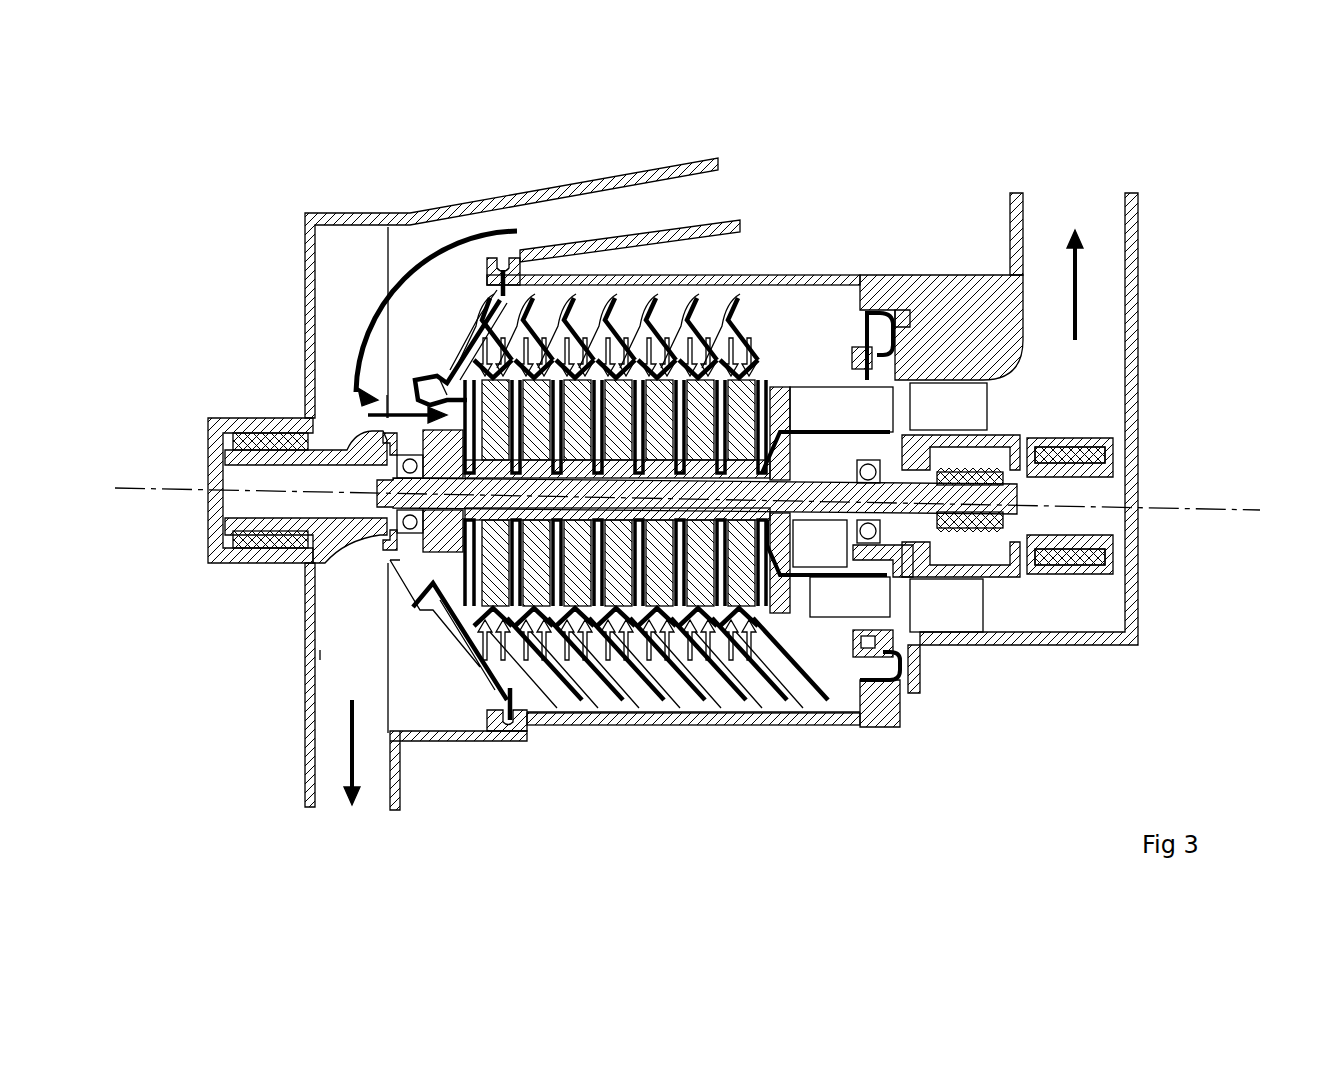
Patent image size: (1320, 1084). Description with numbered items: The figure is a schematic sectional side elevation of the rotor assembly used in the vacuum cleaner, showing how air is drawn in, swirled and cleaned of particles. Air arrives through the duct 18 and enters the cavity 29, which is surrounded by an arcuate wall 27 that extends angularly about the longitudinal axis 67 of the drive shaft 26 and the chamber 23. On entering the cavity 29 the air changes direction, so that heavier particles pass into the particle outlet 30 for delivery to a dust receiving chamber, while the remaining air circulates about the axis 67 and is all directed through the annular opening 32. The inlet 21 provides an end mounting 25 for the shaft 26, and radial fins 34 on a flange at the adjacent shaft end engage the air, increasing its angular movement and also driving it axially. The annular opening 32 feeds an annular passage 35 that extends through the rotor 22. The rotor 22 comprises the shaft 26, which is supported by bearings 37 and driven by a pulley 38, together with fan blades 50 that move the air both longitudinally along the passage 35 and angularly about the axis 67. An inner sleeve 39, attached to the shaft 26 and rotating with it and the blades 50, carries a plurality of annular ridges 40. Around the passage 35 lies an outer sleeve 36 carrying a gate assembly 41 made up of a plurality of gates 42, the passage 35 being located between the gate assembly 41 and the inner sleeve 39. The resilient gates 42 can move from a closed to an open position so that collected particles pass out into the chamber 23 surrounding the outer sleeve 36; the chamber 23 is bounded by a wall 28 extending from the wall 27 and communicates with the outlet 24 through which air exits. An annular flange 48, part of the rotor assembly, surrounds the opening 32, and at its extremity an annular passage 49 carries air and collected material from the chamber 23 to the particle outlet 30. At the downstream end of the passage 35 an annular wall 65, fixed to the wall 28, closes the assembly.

The duct 18 is at (668, 168).
The inlet 21 is at (425, 300).
The rotor 22 is at (800, 417).
The chamber 23 is at (637, 700).
The outlet 24 is at (1090, 221).
The end mounting 25 is at (372, 560).
The drive shaft 26 is at (1017, 510).
The wall 27 is at (450, 743).
The wall 28 is at (683, 722).
The cavity 29 is at (368, 674).
The particle outlet 30 is at (328, 765).
The annular opening 32 is at (388, 415).
The radial fins 34 is at (405, 405).
The annular passage 35 is at (447, 383).
The outer sleeve 36 is at (780, 330).
The bearings 37 is at (400, 528).
The pulley 38 is at (996, 465).
The inner sleeve 39 is at (828, 425).
The annular ridges 40 is at (617, 388).
The gate assembly 41 is at (650, 303).
The gates 42 is at (840, 320).
The annular flange 48 is at (487, 702).
The annular passage 49 is at (905, 327).
The fan blades 50 is at (737, 385).
The annular wall 65 is at (903, 672).
The longitudinal axis 67 is at (1168, 510).